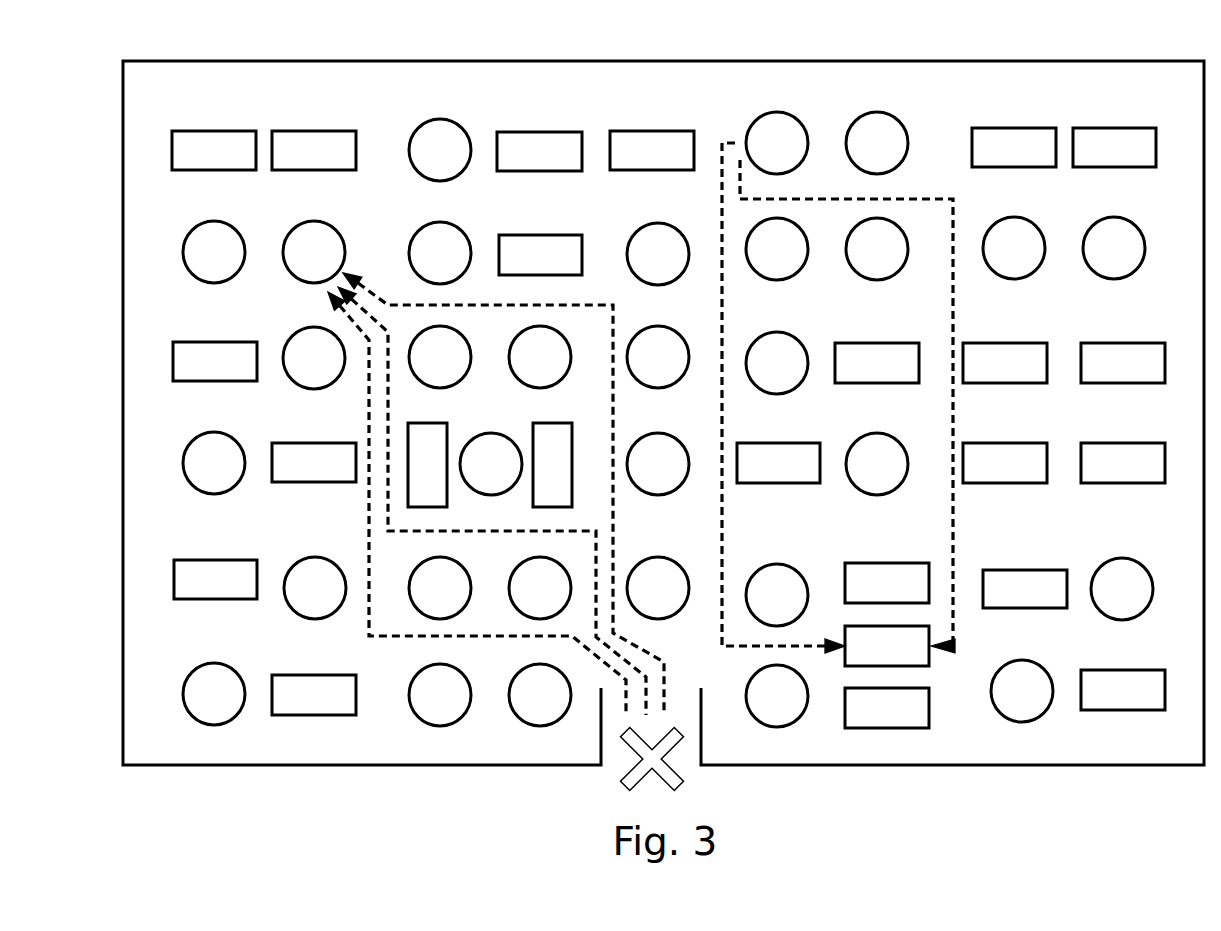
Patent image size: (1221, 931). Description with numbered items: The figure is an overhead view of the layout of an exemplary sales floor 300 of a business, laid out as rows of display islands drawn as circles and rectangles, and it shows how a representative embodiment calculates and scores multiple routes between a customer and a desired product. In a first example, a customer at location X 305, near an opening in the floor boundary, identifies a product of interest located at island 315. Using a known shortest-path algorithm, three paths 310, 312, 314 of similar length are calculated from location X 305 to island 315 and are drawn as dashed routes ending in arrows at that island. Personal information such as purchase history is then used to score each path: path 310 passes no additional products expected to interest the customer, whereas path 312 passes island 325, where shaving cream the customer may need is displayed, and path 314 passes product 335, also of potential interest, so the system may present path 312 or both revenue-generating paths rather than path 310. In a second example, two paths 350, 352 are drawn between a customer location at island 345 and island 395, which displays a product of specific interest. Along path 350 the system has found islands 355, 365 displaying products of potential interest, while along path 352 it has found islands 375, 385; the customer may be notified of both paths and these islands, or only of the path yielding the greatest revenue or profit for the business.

The sales floor 300 is at (160, 46).
The customer location X 305 is at (620, 781).
The path 310 is at (368, 412).
The path 312 is at (530, 532).
The path 314 is at (613, 392).
The island 315 is at (314, 252).
The island 325 is at (491, 464).
The product 335 is at (540, 255).
The island 345 is at (777, 143).
The path 350 is at (722, 288).
The path 352 is at (953, 290).
The island 355 is at (777, 363).
The island 365 is at (777, 696).
The island 375 is at (1005, 363).
The island 385 is at (877, 464).
The island 395 is at (887, 646).